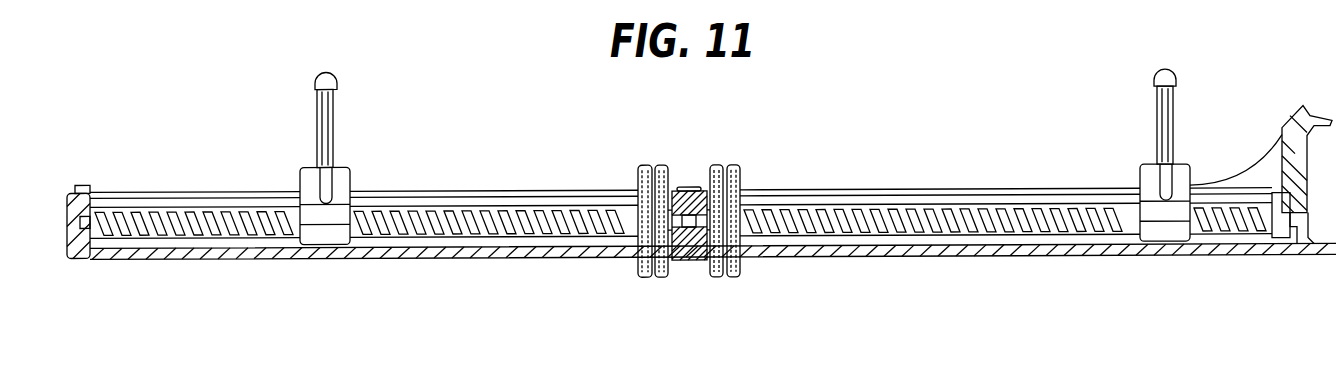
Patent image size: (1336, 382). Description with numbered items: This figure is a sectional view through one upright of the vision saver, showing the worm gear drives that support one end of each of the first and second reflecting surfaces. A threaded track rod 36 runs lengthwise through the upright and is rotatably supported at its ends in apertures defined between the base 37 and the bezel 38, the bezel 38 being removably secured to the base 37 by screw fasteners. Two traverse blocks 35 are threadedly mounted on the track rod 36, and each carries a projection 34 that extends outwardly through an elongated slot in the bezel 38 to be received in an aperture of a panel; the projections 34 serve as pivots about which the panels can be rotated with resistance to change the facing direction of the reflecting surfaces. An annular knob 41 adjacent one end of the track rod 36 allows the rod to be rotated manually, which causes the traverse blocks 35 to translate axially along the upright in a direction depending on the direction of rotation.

The projection 34 is at (338, 113).
The traverse block 35 is at (356, 190).
The threaded track rod 36 is at (245, 210).
The base 37 is at (865, 250).
The bezel 38 is at (912, 188).
The annular knob 41 is at (723, 277).